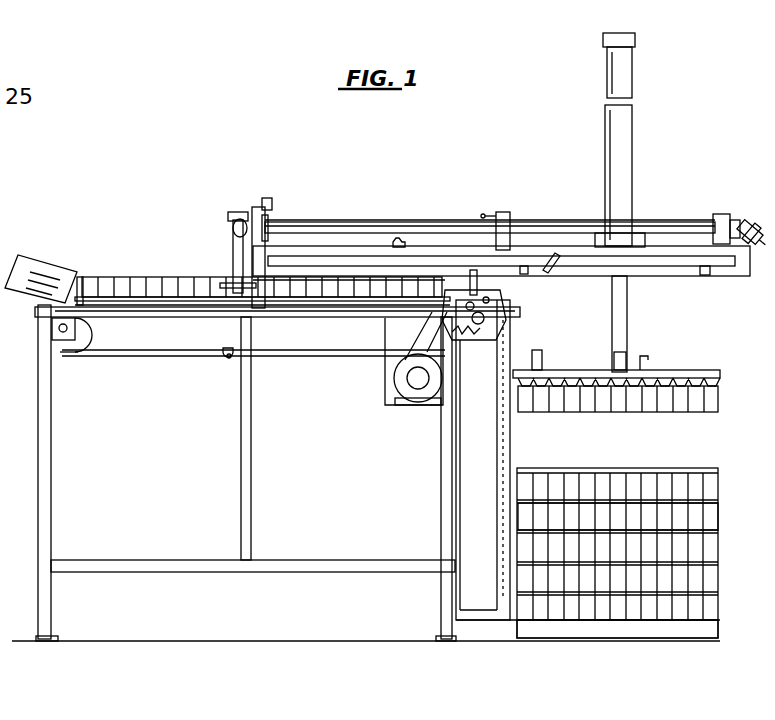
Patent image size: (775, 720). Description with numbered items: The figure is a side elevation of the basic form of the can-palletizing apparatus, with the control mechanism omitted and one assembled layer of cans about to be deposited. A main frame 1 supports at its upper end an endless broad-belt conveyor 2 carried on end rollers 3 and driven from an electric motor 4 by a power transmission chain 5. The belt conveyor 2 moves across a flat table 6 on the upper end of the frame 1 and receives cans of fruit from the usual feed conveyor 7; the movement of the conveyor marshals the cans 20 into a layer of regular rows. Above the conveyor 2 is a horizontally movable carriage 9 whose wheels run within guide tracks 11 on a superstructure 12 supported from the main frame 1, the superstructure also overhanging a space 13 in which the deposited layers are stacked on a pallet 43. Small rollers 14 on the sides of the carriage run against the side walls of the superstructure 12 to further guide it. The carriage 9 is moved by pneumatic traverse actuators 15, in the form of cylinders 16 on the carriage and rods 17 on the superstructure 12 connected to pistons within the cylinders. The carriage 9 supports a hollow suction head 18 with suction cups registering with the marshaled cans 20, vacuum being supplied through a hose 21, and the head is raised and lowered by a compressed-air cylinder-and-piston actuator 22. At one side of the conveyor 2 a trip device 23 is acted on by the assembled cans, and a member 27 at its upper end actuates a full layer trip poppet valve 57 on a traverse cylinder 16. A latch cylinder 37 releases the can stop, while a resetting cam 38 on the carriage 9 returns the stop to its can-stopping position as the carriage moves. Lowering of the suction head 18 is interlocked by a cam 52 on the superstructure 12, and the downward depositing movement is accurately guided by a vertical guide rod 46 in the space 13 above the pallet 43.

The main frame 1 is at (45, 450).
The endless broad-belt conveyor 2 is at (300, 330).
The end rollers 3 is at (72, 340).
The electric motor 4 is at (417, 382).
The power transmission chain 5 is at (440, 340).
The flat table 6 is at (140, 318).
The feed conveyor 7 is at (33, 280).
The carriage 9 is at (659, 260).
The guide tracks 11 is at (332, 260).
The superstructure 12 is at (305, 276).
The space 13 is at (617, 532).
The small rollers 14 is at (706, 272).
The traverse actuators 15 is at (656, 224).
The cylinders 16 is at (555, 228).
The rods 17 is at (355, 228).
The suction head 18 is at (690, 376).
The cans 20 is at (118, 284).
The hose 21 is at (542, 362).
The actuator 22 is at (622, 140).
The trip device 23 is at (228, 262).
The member 27 is at (268, 210).
The latch cylinder 37 is at (748, 226).
The resetting cam 38 is at (549, 266).
The pallet 43 is at (645, 627).
The vertical guide rod 46 is at (508, 305).
The cam 52 is at (400, 240).
The full layer trip poppet valve 57 is at (503, 212).